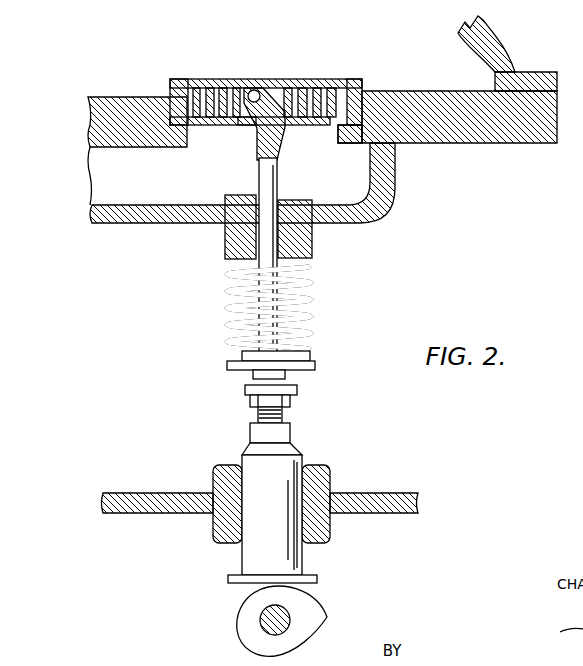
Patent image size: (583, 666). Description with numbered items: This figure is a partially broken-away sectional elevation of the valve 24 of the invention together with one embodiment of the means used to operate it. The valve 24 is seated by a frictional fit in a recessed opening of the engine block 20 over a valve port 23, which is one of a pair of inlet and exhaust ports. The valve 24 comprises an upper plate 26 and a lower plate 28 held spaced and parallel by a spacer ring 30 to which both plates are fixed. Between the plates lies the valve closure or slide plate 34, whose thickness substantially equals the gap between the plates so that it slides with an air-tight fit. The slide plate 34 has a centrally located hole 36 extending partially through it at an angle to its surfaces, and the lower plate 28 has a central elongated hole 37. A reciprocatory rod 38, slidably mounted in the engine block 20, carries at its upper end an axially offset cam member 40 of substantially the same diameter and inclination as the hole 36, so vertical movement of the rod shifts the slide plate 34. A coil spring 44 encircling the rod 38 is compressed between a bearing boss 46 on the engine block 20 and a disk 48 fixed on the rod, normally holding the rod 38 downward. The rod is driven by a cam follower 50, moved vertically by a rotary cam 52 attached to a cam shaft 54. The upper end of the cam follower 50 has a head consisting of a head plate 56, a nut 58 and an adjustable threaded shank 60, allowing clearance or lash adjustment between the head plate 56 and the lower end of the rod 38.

The internal combustion engine 20 is at (490, 148).
The valve port 23 is at (340, 128).
The valve 24 is at (252, 97).
The upper plate 26 is at (257, 77).
The lower plate 28 is at (192, 130).
The spacer ring 30 is at (170, 87).
The slide plate 34 is at (279, 78).
The hole 36 is at (243, 78).
The elongated hole 37 is at (246, 126).
The reciprocatory rod 38 is at (278, 183).
The cam member 40 is at (258, 135).
The coil spring 44 is at (311, 284).
The bearing boss 46 is at (225, 240).
The disk 48 is at (228, 364).
The cam follower 50 is at (254, 460).
The rotary cam 52 is at (321, 614).
The cam shaft 54 is at (262, 618).
The head plate 56 is at (298, 389).
The nut 58 is at (291, 403).
The threaded shank 60 is at (258, 416).